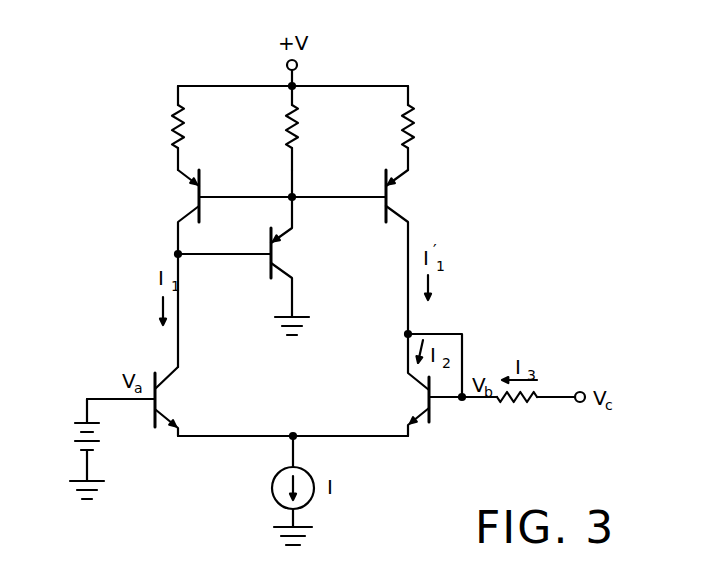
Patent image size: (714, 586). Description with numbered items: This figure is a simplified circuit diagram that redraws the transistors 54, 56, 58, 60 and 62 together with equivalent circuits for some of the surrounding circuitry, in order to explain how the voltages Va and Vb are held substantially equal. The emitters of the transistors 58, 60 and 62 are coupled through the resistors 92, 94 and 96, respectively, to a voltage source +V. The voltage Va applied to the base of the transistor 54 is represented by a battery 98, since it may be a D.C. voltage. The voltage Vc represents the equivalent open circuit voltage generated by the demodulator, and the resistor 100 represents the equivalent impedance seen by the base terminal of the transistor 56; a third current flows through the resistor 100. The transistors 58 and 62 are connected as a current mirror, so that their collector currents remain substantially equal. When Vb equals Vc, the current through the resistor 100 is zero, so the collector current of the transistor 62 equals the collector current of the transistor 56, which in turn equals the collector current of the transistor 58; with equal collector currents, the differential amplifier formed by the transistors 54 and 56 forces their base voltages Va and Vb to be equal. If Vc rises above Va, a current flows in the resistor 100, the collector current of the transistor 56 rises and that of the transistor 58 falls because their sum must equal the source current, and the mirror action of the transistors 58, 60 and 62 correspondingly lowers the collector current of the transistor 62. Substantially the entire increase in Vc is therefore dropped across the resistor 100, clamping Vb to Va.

The transistor 54 is at (166, 400).
The transistor 56 is at (424, 398).
The transistor 58 is at (193, 197).
The transistor 60 is at (282, 252).
The transistor 62 is at (394, 196).
The resistor 92 is at (172, 127).
The resistor 94 is at (286, 127).
The resistor 96 is at (402, 127).
The battery 98 is at (76, 428).
The resistor 100 is at (520, 407).